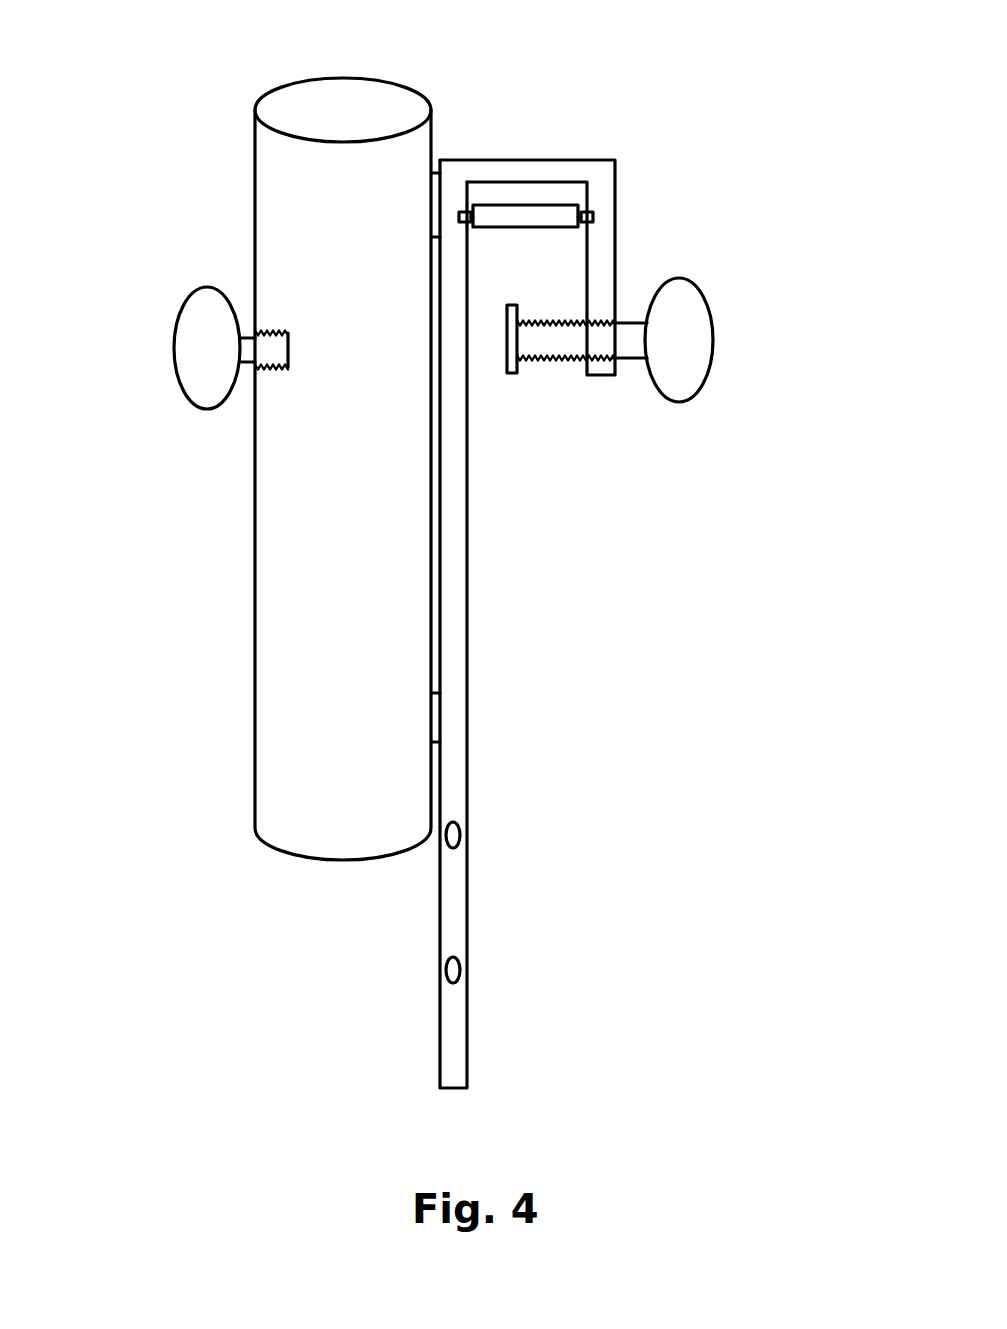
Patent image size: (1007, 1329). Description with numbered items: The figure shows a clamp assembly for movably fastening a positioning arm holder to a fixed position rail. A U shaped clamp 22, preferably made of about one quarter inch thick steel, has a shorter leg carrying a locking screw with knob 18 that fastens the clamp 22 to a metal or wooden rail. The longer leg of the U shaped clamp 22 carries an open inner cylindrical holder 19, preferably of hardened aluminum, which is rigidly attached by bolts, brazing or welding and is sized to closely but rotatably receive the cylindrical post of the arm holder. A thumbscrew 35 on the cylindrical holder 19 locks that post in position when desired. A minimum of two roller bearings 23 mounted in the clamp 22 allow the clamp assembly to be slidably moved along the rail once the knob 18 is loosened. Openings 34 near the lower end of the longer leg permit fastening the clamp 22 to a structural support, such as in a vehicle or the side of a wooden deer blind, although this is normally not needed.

The locking screw with knob 18 is at (677, 373).
The inner cylindrical holder 19 is at (402, 608).
The U shaped clamp 22 is at (517, 162).
The roller bearings 23 is at (563, 215).
The openings 34 is at (467, 840).
The thumbscrew 35 is at (207, 370).